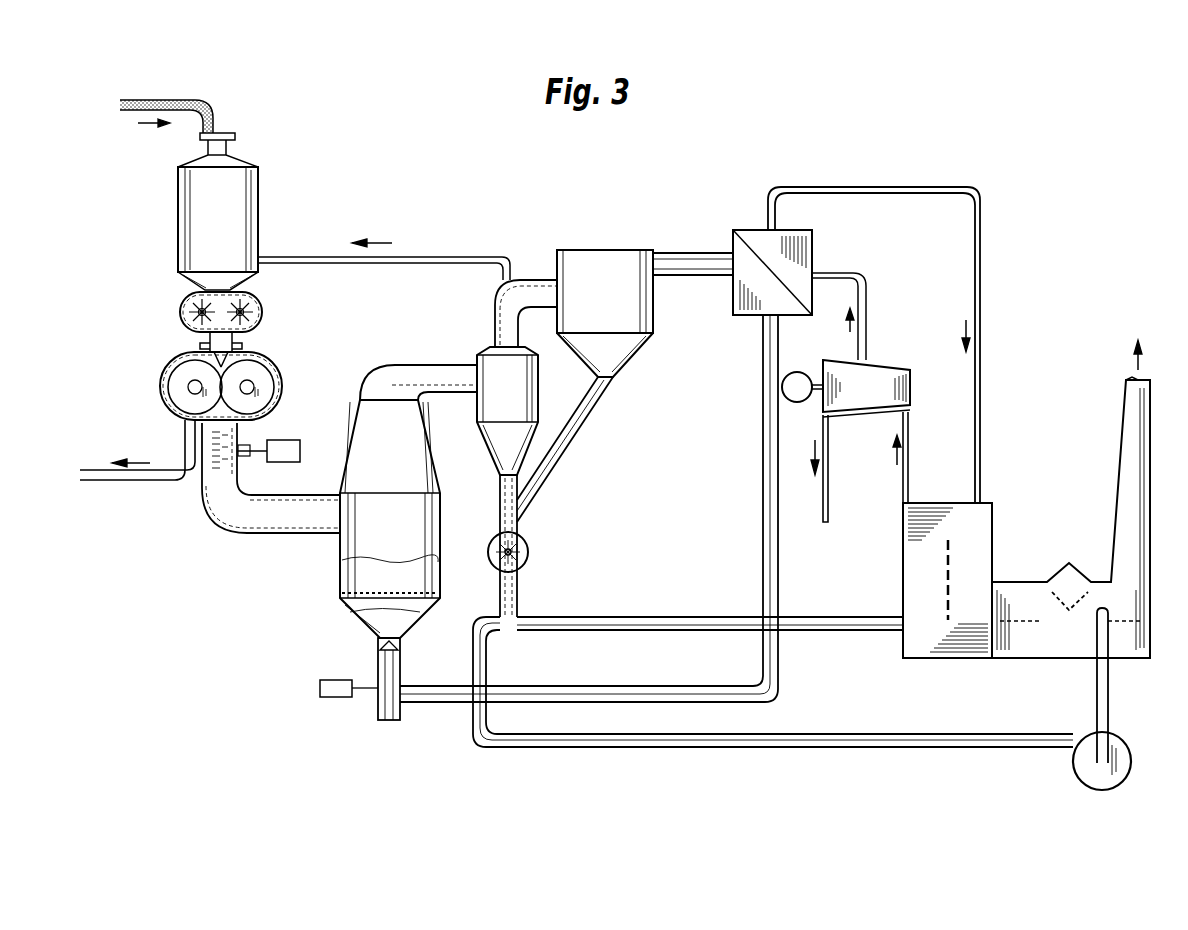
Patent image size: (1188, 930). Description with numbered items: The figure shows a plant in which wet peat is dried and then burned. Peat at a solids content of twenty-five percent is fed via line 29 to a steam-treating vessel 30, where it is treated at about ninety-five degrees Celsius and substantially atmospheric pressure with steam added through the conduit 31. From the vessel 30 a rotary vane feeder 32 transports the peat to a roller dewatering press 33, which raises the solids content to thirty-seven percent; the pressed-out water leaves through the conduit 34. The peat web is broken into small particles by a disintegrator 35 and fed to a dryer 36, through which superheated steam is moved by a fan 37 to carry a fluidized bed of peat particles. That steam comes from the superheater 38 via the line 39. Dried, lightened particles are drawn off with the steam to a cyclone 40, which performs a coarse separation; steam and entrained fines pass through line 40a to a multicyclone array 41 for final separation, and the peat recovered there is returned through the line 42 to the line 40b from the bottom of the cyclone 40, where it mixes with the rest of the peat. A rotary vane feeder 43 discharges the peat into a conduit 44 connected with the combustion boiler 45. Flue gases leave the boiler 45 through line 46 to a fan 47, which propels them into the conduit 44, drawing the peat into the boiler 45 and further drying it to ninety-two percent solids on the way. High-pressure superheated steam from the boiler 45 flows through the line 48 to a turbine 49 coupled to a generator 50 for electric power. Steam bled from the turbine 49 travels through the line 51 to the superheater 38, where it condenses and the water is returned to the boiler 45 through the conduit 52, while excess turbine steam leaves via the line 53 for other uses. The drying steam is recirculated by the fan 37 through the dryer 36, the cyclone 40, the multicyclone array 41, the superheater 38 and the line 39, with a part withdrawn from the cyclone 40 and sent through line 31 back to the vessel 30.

The line 29 is at (190, 100).
The steam-treating vessel 30 is at (185, 212).
The conduit 31 is at (432, 257).
The rotary vane feeder 32 is at (180, 312).
The roller dewatering press 33 is at (172, 385).
The conduit 34 is at (105, 470).
The disintegrator 35 is at (205, 487).
The dryer 36 is at (340, 563).
The fan 37 is at (380, 660).
The superheater 38 is at (735, 245).
The line 39 is at (652, 690).
The cyclone 40 is at (486, 349).
The line 40a is at (530, 279).
The line 40b is at (503, 540).
The multicyclone array 41 is at (590, 260).
The line 42 is at (578, 440).
The rotary vane feeder 43 is at (530, 552).
The conduit 44 is at (655, 617).
The combustion boiler 45 is at (903, 553).
The line 46 is at (1108, 692).
The fan 47 is at (1131, 762).
The line 48 is at (908, 468).
The turbine 49 is at (885, 370).
The generator 50 is at (817, 356).
The line 51 is at (866, 305).
The conduit 52 is at (850, 187).
The line 53 is at (830, 490).